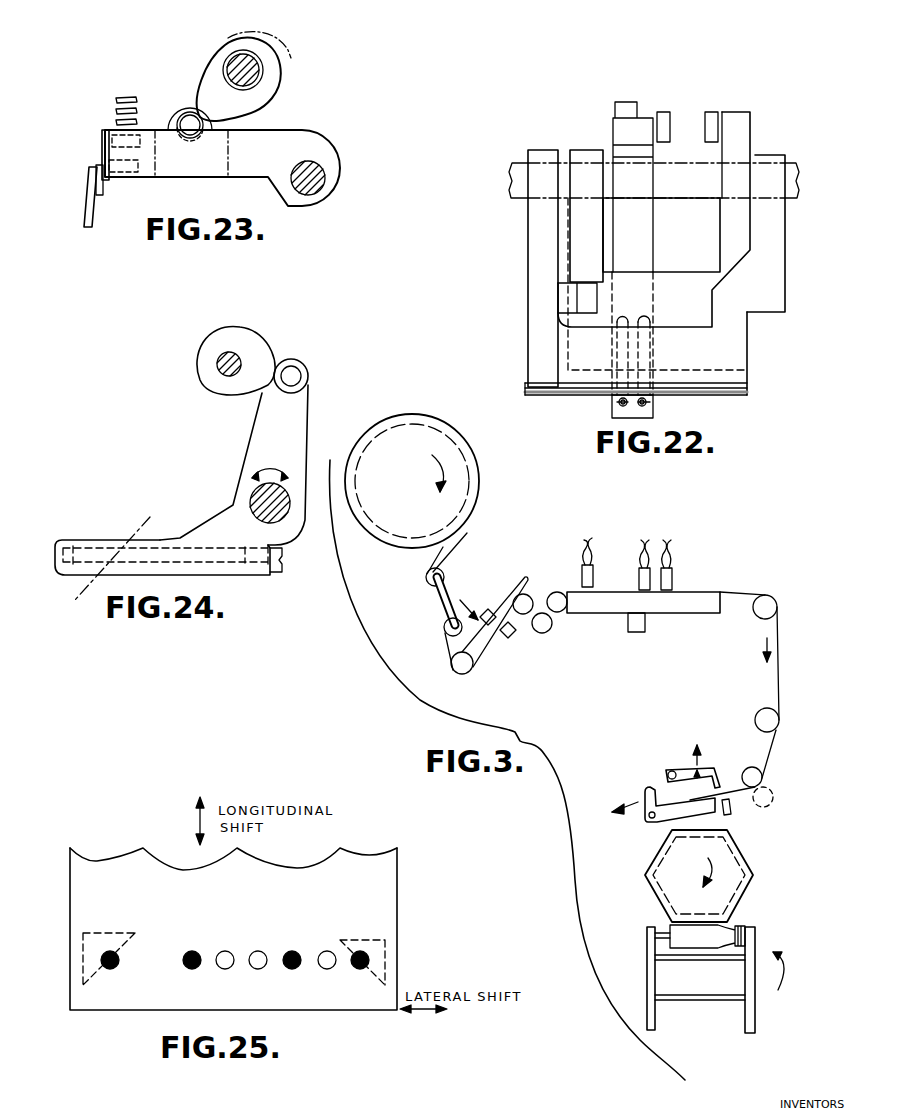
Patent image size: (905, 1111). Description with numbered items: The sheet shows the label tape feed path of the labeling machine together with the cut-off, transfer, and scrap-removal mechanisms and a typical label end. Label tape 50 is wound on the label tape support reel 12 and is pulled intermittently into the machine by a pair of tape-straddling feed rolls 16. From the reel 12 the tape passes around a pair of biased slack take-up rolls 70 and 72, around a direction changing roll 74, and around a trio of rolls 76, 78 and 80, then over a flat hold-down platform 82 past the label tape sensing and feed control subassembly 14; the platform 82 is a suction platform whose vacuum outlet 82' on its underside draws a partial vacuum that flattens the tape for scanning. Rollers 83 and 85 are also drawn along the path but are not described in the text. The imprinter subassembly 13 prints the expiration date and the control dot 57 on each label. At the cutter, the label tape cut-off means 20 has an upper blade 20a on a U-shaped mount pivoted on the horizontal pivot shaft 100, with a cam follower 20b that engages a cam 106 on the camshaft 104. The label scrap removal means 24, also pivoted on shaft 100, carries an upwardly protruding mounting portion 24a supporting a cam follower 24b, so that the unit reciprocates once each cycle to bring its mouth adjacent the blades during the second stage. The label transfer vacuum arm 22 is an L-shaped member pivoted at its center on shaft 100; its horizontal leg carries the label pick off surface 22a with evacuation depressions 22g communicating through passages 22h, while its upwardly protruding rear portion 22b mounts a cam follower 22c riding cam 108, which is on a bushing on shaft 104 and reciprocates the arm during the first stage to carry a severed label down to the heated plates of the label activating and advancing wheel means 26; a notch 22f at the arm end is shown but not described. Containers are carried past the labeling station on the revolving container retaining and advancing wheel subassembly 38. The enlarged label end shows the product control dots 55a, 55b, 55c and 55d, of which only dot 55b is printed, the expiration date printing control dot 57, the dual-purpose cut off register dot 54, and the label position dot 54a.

In FIG. 3, the label tape support reel 12 is at (480, 500).
In FIG. 3, the imprinter subassembly 13 is at (502, 645).
In FIG. 3, the label tape sensing and feed control subassembly 14 is at (725, 528).
In FIG. 3, the label tape advancing feed rolls 16 is at (752, 765).
In FIG. 23, the label tape cut-off means 20 is at (268, 137).
In FIG. 22, the label tape cut-off means 20 is at (792, 253).
In FIG. 3, the label tape cut-off means 20 is at (676, 765).
In FIG. 23, the upper blade 20a is at (102, 133).
In FIG. 22, the upper blade 20a is at (547, 397).
In FIG. 23, the cam follower 20b is at (85, 210).
In FIG. 22, the cam follower 20b is at (585, 296).
In FIG. 24, the label transfer vacuum arm 22 is at (286, 405).
In FIG. 22, the label transfer vacuum arm 22 is at (650, 250).
In FIG. 3, the label transfer vacuum arm 22 is at (660, 824).
In FIG. 24, the label pick off surface 22a is at (78, 542).
In FIG. 22, the label pick off surface 22a is at (655, 405).
In FIG. 22, the upwardly protruding rear portion 22b is at (622, 125).
In FIG. 24, the cam follower 22c is at (291, 378).
In FIG. 22, the cam follower 22c is at (663, 112).
In FIG. 24, the lever notch 22f is at (272, 573).
In FIG. 24, the evacuation depressions 22g is at (105, 548).
In FIG. 22, the evacuation depressions 22g is at (618, 398).
In FIG. 24, the passages 22h is at (91, 565).
In FIG. 22, the label scrap removal means 24 is at (595, 232).
In FIG. 22, the upwardly protruding mounting portion 24a is at (740, 115).
In FIG. 22, the cam follower 24b is at (712, 112).
In FIG. 3, the label activating and advancing wheel means 26 is at (745, 843).
In FIG. 3, the container retaining and advancing wheel subassembly 38 is at (760, 928).
In FIG. 3, the label tape 50 is at (462, 545).
In FIG. 25, the cut off register dot 54 is at (110, 970).
In FIG. 25, the label position dot 54a is at (363, 969).
In FIG. 25, the product control dot 55a is at (327, 969).
In FIG. 25, the product control dot 55b is at (292, 970).
In FIG. 25, the product control dot 55c is at (258, 969).
In FIG. 25, the product control dot 55d is at (225, 969).
In FIG. 25, the expiration date printing control dot 57 is at (192, 970).
In FIG. 3, the biased slack take-up roll 70 is at (445, 583).
In FIG. 3, the biased slack take-up roll 72 is at (447, 630).
In FIG. 3, the direction changing roll 74 is at (462, 675).
In FIG. 3, the roll 76 is at (519, 590).
In FIG. 3, the roll 78 is at (542, 634).
In FIG. 3, the roll 80 is at (557, 592).
In FIG. 3, the hold-down platform 82 is at (655, 587).
In FIG. 3, the vacuum outlet 82' is at (621, 632).
In FIG. 3, the roller 83 is at (777, 602).
In FIG. 3, the roller 85 is at (770, 720).
In FIG. 22, the horizontal pivot shaft 100 is at (793, 170).
In FIG. 23, the camshaft 104 is at (262, 77).
In FIG. 24, the camshaft 104 is at (232, 355).
In FIG. 23, the cam 106 is at (227, 40).
In FIG. 24, the cam 108 is at (207, 352).